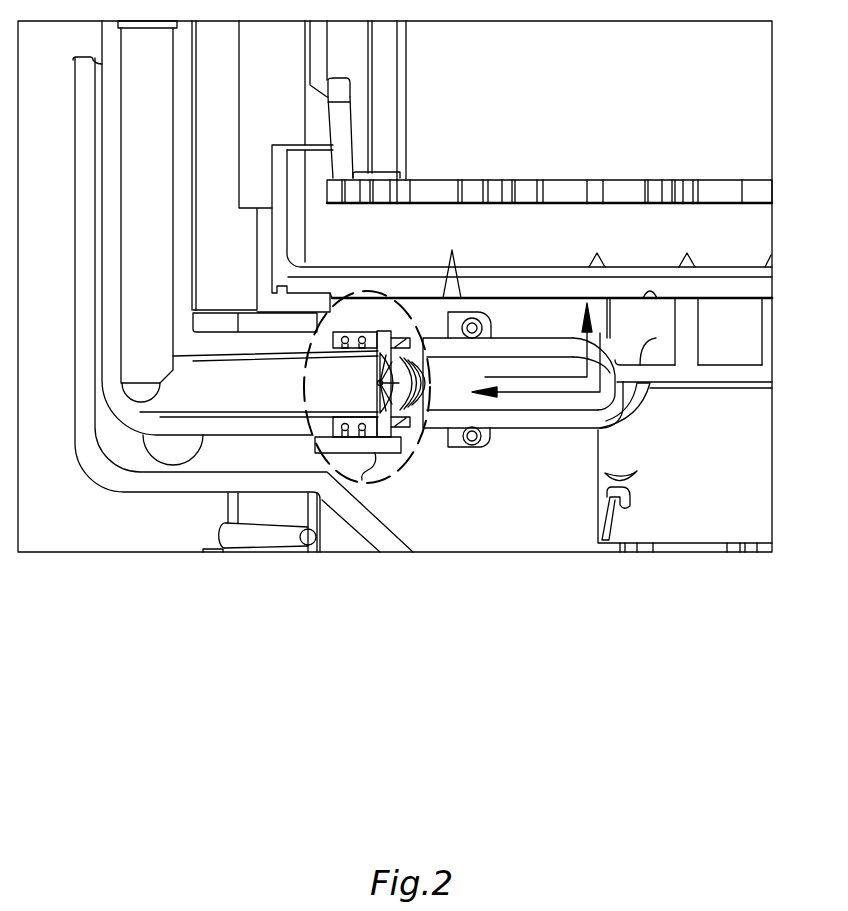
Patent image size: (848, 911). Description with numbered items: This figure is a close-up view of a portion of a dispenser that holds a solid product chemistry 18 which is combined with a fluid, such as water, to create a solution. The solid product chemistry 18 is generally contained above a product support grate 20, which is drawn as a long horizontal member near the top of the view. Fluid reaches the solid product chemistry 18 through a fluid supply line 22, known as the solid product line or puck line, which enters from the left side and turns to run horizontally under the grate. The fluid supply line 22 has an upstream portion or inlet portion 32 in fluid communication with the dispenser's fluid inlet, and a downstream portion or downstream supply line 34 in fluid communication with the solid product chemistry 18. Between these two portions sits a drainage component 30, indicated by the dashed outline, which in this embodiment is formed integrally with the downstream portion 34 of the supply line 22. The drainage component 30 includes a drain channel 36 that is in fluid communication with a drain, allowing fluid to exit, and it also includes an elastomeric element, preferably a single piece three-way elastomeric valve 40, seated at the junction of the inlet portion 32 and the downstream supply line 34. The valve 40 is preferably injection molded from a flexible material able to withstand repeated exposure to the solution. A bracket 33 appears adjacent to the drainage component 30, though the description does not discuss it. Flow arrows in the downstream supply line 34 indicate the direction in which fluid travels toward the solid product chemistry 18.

The solid product chemistry 18 is at (622, 113).
The product support grate 20 is at (764, 192).
The fluid supply line 22 is at (156, 369).
The drainage component 30 is at (383, 480).
The inlet portion 32 is at (272, 396).
The mounting bracket 33 is at (399, 448).
The downstream supply line 34 is at (458, 396).
The drain channel 36 is at (410, 346).
The single piece three-way elastomeric valve 40 is at (379, 387).